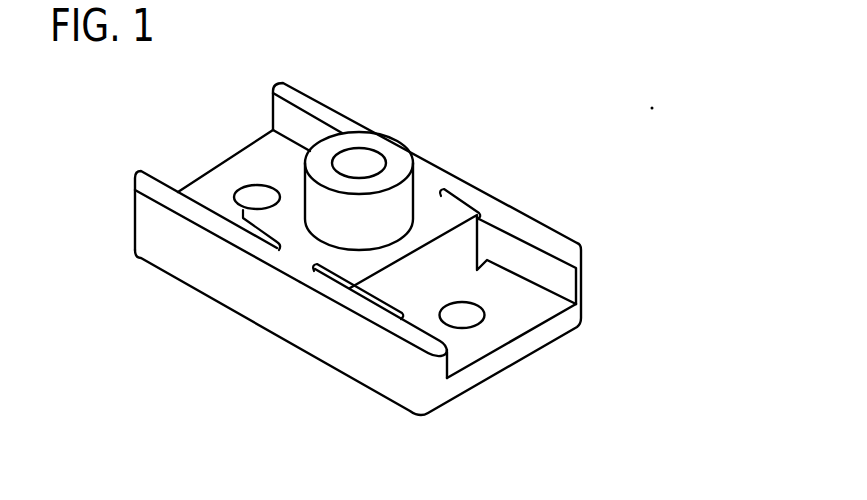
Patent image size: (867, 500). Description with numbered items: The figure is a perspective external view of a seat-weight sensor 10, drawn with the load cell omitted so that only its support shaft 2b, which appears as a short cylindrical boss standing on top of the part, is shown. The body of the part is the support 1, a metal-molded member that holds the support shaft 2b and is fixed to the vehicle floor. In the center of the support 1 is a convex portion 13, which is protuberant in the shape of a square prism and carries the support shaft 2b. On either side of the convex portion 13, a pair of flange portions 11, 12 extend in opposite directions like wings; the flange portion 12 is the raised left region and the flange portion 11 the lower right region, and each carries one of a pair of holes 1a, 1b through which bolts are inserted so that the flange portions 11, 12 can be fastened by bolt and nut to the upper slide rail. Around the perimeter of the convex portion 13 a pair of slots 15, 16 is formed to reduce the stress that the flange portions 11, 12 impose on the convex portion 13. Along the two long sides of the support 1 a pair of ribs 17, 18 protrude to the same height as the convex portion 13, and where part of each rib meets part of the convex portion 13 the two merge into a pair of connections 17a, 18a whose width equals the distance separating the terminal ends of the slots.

The seat-weight sensor 10 is at (708, 153).
The support 1 is at (586, 297).
The hole 1a is at (453, 318).
The hole 1b is at (247, 200).
The support shaft 2b is at (369, 135).
The flange portion 11 is at (520, 322).
The flange portion 12 is at (208, 180).
The convex portion 13 is at (283, 173).
The slot 15 is at (453, 267).
The slot 16 is at (253, 266).
The rib 17 is at (562, 243).
The connection 17a is at (420, 185).
The rib 18 is at (403, 330).
The connection 18a is at (293, 253).